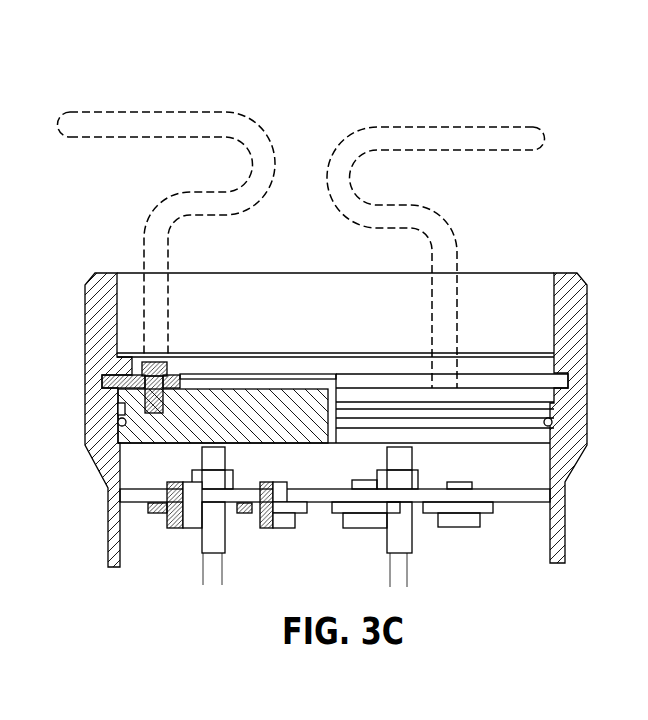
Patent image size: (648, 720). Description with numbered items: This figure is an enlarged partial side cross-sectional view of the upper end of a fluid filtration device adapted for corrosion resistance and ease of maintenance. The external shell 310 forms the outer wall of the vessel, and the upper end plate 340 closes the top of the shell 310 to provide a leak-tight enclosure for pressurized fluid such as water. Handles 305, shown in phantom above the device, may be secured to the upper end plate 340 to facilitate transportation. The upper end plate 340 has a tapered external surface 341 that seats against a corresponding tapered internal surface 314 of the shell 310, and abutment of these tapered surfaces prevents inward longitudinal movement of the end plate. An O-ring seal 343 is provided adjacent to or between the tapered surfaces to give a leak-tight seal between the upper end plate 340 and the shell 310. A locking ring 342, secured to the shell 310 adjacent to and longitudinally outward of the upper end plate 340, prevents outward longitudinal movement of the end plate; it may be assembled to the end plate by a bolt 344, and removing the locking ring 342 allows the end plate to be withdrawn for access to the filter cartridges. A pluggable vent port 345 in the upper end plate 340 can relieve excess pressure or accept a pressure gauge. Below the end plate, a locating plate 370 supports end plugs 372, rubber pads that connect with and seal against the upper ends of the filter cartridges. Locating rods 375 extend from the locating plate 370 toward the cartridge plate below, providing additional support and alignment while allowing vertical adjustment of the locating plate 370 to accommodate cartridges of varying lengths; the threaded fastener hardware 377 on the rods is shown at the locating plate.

The handle 305 is at (177, 112).
The external shell 310 is at (587, 315).
The tapered internal surface 314 is at (548, 408).
The upper end plate 340 is at (158, 427).
The tapered external surface 341 is at (118, 410).
The locking ring 342 is at (120, 357).
The O-ring seal 343 is at (552, 422).
The bolt 344 is at (157, 365).
The vent port 345 is at (330, 400).
The locating plate 370 is at (520, 503).
The end plug 372 is at (463, 527).
The locating rod 375 is at (203, 540).
The nut 377 is at (193, 471).